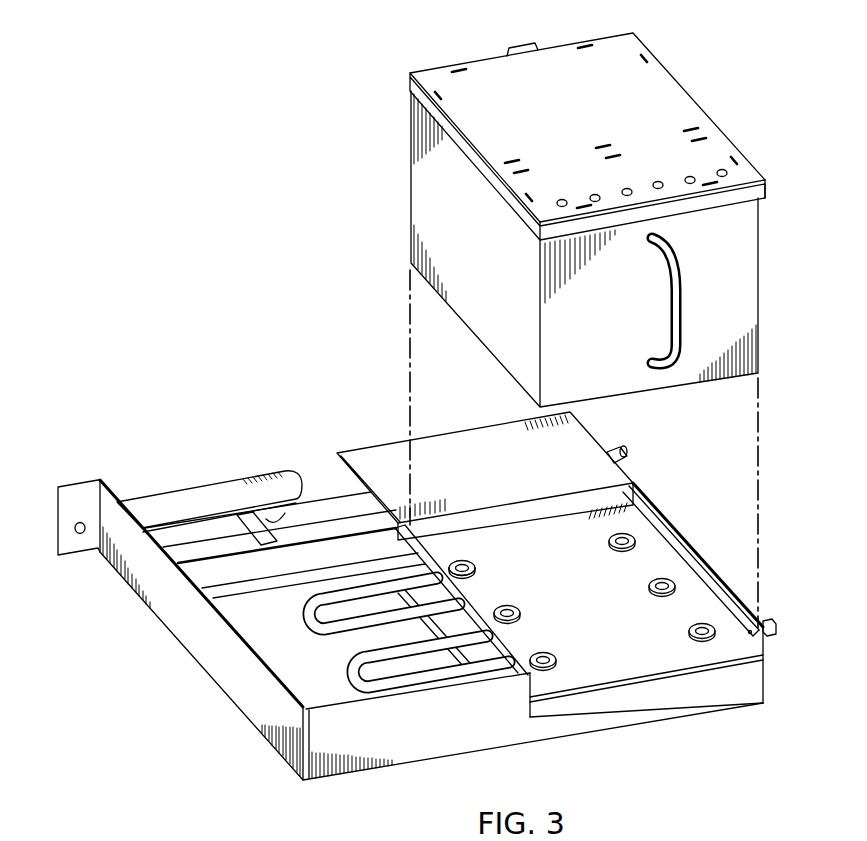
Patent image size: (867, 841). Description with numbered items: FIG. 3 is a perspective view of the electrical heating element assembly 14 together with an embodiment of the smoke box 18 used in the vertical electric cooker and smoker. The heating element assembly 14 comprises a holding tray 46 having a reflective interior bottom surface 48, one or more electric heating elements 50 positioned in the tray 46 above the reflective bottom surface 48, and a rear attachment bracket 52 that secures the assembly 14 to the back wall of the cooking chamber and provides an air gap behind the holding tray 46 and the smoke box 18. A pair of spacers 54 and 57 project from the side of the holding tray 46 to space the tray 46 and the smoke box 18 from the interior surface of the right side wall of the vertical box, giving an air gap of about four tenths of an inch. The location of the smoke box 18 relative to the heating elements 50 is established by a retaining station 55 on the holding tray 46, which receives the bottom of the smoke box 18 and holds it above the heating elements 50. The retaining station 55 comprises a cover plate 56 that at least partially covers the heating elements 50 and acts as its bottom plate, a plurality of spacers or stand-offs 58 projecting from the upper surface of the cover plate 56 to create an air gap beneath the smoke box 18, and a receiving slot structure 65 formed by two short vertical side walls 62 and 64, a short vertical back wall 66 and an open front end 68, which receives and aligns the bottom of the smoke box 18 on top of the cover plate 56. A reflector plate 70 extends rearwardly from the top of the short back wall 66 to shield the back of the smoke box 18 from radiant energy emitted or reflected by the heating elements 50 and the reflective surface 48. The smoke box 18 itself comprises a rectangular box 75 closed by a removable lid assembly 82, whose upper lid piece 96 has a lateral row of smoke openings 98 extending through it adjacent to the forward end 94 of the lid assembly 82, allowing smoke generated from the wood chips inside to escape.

The smoke box 18 is at (392, 103).
The upper lid piece 96 is at (565, 55).
The removable lid assembly 82 is at (482, 59).
The smoke openings 98 is at (595, 197).
The forward end 94 is at (771, 193).
The rectangular box 75 is at (418, 162).
The electrical heating element assembly 14 is at (162, 612).
The reflective interior bottom surface 48 is at (273, 648).
The holding tray 46 is at (438, 757).
The rear attachment bracket 52 is at (180, 490).
The electric heating element 50 is at (363, 587).
The short vertical side wall 62 is at (468, 604).
The reflector plate 70 is at (455, 430).
The short vertical back wall 66 is at (512, 517).
The spacer 54 is at (628, 456).
The short vertical side wall 64 is at (665, 535).
The receiving slot structure 65 is at (677, 573).
The retaining station 55 is at (700, 600).
The spacer 57 is at (777, 627).
The spacers (stand-offs) 58 is at (473, 566).
The cover plate 56 is at (582, 683).
The open front end 68 is at (660, 670).